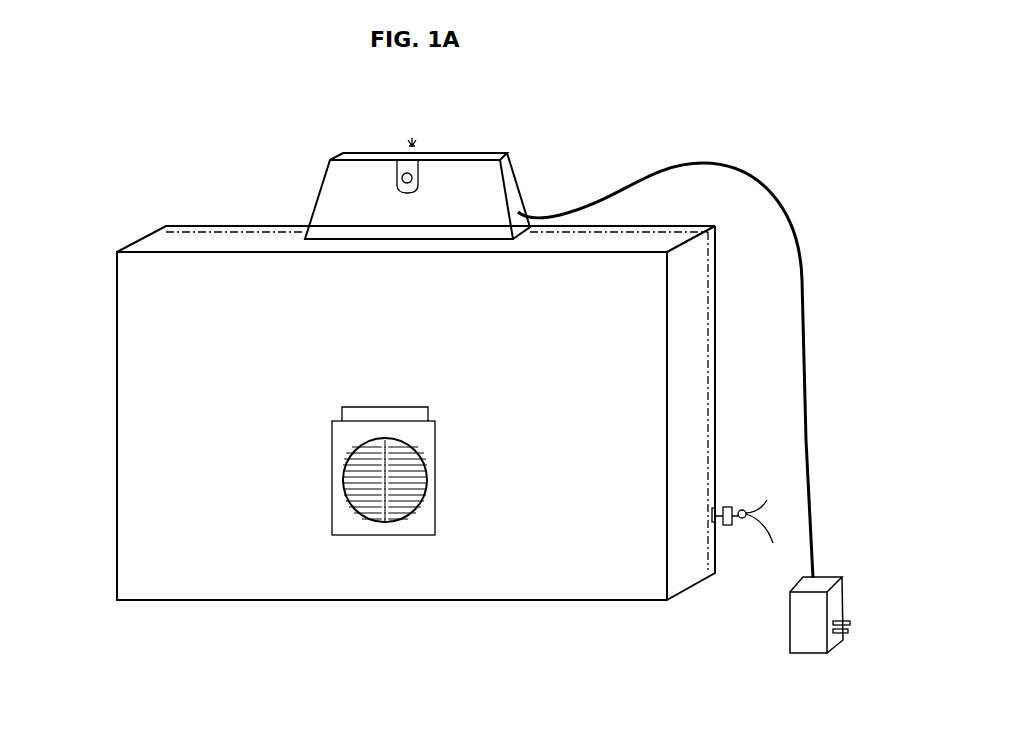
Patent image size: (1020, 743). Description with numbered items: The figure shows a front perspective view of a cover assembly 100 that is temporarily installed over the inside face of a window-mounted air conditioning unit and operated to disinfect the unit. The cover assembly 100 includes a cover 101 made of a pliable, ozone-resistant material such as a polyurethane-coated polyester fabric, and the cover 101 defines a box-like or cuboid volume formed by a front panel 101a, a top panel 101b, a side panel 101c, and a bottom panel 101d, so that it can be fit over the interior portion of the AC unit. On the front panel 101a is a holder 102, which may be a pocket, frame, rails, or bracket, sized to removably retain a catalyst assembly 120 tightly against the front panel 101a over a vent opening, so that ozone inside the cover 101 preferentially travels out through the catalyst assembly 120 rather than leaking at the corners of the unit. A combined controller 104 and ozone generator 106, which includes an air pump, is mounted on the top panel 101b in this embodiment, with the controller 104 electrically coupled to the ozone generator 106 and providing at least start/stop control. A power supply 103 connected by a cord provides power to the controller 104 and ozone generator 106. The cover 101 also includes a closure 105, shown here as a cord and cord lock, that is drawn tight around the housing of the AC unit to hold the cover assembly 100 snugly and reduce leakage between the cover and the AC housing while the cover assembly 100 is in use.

The cover assembly 100 is at (110, 149).
The cover 101 is at (115, 284).
The front panel 101a is at (392, 426).
The top panel 101b is at (167, 240).
The side panel 101c is at (688, 370).
The bottom panel 101d is at (455, 602).
The holder 102 is at (430, 457).
The power supply 103 is at (837, 593).
The controller 104 is at (451, 170).
The ozone generator 106 is at (417, 188).
The closure 105 is at (727, 507).
The catalyst assembly 120 is at (377, 413).